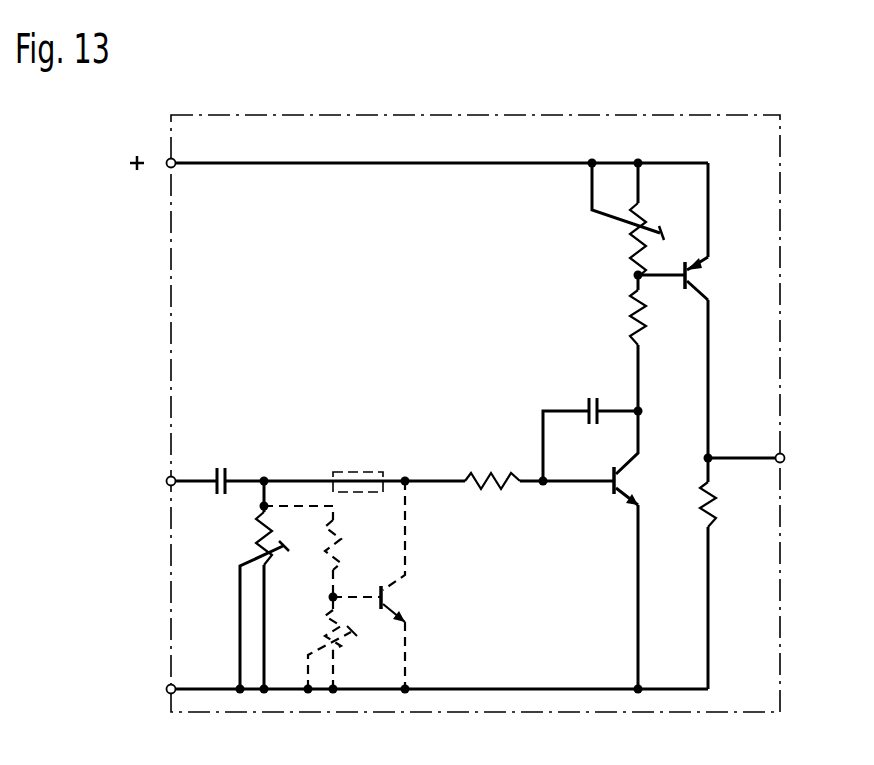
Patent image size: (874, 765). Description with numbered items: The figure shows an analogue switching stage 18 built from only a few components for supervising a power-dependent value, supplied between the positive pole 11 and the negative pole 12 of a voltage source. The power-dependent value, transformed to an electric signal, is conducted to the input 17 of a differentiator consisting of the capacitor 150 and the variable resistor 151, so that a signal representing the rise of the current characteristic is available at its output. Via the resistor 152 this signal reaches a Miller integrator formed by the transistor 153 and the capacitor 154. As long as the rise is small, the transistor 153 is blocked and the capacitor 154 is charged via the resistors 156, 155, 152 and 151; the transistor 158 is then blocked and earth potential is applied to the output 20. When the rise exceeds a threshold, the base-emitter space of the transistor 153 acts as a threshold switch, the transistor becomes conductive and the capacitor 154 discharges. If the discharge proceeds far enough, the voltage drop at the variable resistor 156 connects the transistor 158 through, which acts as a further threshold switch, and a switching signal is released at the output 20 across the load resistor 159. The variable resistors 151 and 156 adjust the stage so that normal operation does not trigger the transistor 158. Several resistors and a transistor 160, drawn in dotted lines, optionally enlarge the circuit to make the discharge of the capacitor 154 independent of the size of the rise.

The positive pole 11 is at (169, 158).
The negative pole 12 is at (166, 690).
The input 17 is at (168, 477).
The switching stage 18 is at (457, 134).
The output 20 is at (784, 455).
The capacitor 150 is at (228, 466).
The variable resistor 151 is at (270, 565).
The resistor 152 is at (500, 470).
The transistor 153 is at (628, 480).
The capacitor 154 is at (590, 394).
The resistor 155 is at (648, 318).
The variable resistor 156 is at (628, 245).
The transistor 158 is at (700, 275).
The load resistor 159 is at (714, 508).
The transistor 160 is at (392, 592).